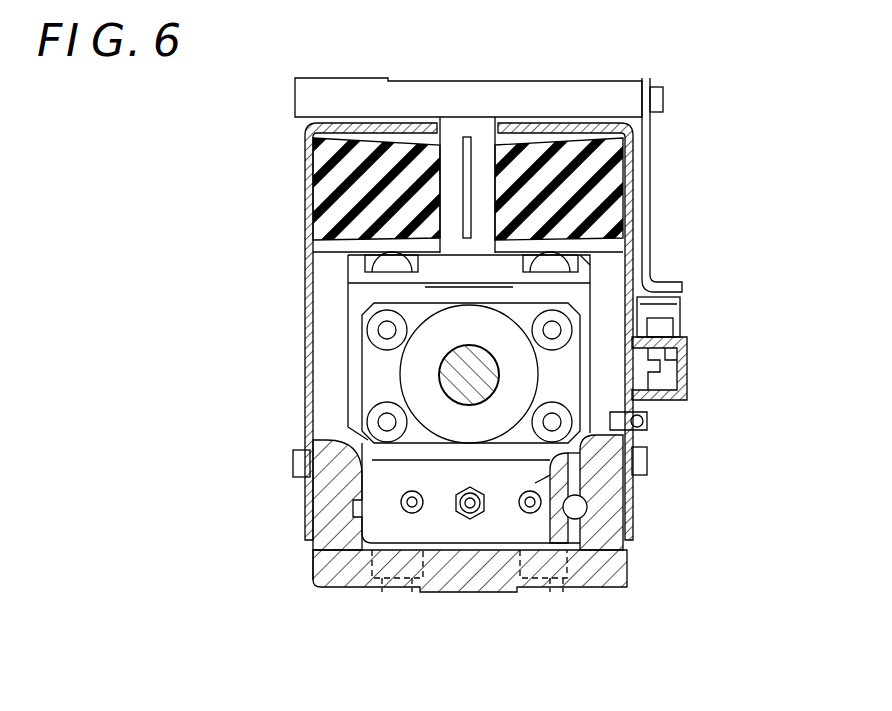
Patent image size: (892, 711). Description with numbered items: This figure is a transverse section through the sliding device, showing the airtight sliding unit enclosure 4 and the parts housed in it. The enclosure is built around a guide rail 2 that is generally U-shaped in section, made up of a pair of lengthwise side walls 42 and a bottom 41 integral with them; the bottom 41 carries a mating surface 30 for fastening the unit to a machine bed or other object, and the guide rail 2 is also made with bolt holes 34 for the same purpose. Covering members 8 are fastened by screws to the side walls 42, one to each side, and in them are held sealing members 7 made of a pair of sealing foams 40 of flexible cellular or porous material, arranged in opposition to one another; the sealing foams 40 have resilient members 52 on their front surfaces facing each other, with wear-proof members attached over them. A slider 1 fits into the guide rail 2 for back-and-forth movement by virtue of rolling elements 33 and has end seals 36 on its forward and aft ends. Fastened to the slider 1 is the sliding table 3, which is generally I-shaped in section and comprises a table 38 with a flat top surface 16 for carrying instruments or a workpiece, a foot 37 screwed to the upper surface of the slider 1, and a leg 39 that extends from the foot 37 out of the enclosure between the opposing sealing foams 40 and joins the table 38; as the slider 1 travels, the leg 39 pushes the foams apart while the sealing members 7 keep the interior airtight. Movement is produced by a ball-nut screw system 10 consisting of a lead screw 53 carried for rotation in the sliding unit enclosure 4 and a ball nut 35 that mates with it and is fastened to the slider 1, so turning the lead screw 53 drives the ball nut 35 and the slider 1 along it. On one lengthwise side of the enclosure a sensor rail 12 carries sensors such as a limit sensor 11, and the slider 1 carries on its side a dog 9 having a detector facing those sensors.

The slider 1 is at (535, 483).
The guide rail 2 is at (477, 598).
The sliding table 3 is at (620, 93).
The sliding unit enclosure 4 is at (411, 314).
The sealing members 7 is at (333, 158).
The covering members 8 is at (460, 238).
The dog 9 is at (652, 186).
The ball-nut screw system 10 is at (437, 374).
The limit sensor 11 is at (690, 300).
The sensor rail 12 is at (680, 372).
The top surface 16 is at (454, 73).
The mating surface 30 is at (362, 592).
The rolling element 33 is at (578, 508).
The bolt holes 34 is at (552, 596).
The ball nut 35 is at (472, 373).
The end seals 36 is at (400, 520).
The foot 37 is at (580, 265).
The table 38 is at (357, 92).
The leg 39 is at (508, 143).
The sealing foams 40 is at (357, 198).
The bottom 41 is at (477, 572).
The side walls 42 is at (490, 492).
The resilient members 52 is at (467, 132).
The lead screw 53 is at (500, 380).